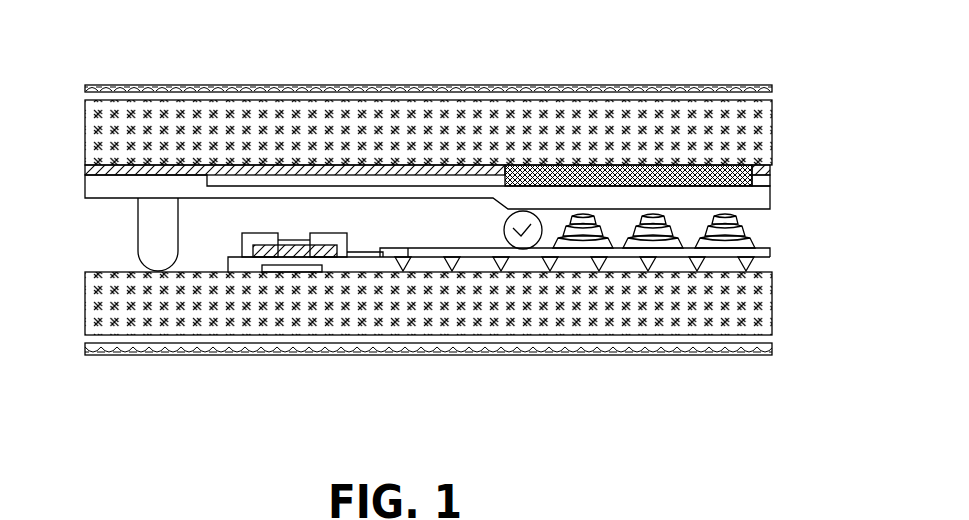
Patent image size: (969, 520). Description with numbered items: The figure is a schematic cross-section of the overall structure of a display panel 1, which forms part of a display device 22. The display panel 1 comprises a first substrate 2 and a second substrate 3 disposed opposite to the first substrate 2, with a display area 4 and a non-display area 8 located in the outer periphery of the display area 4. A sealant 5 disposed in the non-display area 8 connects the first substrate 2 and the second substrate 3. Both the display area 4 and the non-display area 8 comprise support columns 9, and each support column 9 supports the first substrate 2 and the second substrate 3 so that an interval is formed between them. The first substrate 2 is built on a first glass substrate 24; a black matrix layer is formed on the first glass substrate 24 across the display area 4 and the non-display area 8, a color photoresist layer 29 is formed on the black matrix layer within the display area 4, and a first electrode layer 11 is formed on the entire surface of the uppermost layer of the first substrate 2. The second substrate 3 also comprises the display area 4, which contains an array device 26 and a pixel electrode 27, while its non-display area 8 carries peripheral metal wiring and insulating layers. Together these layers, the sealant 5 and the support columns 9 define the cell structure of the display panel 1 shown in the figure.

The display panel 1 is at (46, 85).
The first substrate 2 is at (840, 88).
The second substrate 3 is at (826, 248).
The display area 4 is at (772, 72).
The sealant 5 is at (152, 238).
The non-display area 8 is at (203, 72).
The support column 9 is at (507, 222).
The first electrode layer 11 is at (770, 199).
The display device 22 is at (377, 72).
The first glass substrate 24 is at (765, 116).
The array device 26 is at (355, 238).
The pixel electrode 27 is at (755, 258).
The color photoresist layer 29 is at (768, 166).